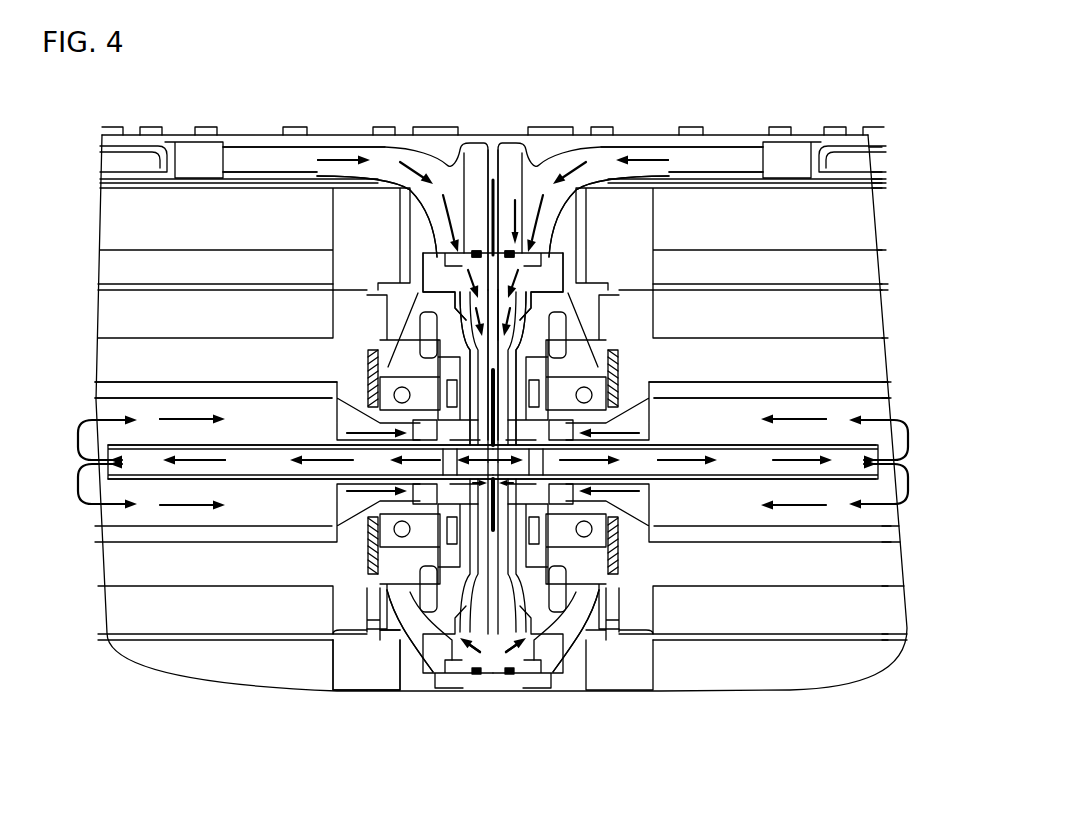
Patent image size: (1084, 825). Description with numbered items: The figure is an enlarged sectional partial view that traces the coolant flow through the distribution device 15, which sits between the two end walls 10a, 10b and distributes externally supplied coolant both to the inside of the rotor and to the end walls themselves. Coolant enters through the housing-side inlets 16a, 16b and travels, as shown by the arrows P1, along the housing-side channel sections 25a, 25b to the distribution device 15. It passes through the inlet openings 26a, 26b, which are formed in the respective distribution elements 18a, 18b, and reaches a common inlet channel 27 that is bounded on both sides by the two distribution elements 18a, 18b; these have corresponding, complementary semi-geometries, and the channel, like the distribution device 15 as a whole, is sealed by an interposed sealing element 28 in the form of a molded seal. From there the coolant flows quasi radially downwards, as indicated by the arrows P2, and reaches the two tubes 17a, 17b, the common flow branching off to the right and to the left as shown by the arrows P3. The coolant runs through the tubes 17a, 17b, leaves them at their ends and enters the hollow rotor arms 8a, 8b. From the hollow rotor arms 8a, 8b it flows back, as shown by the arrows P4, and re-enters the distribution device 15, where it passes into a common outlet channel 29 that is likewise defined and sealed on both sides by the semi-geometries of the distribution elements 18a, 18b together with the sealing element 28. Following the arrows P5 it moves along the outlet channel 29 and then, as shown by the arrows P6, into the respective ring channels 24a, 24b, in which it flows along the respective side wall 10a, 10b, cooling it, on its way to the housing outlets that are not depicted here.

The hollow rotor arm 8a is at (878, 532).
The hollow rotor arm 8b is at (115, 533).
The end wall 10a is at (548, 280).
The end wall 10b is at (433, 277).
The distribution device 15 is at (500, 245).
The housing-side inlet 16a is at (683, 160).
The housing-side inlet 16b is at (238, 160).
The tube 17a is at (687, 480).
The tube 17b is at (290, 482).
The distribution element 18a is at (513, 345).
The distribution element 18b is at (465, 330).
The ring channel 24a is at (527, 660).
The ring channel 24b is at (455, 658).
The housing-side channel section 25a is at (593, 158).
The housing-side channel section 25b is at (398, 158).
The inlet opening 26a is at (540, 262).
The inlet opening 26b is at (470, 257).
The common inlet channel 27 is at (513, 303).
The sealing element 28 is at (485, 255).
The common outlet channel 29 is at (477, 602).
The arrows P1 is at (347, 155).
The arrows P2 is at (493, 400).
The arrows P3 is at (320, 462).
The arrows P4 is at (188, 418).
The arrows P5 is at (487, 587).
The arrows P6 is at (503, 638).